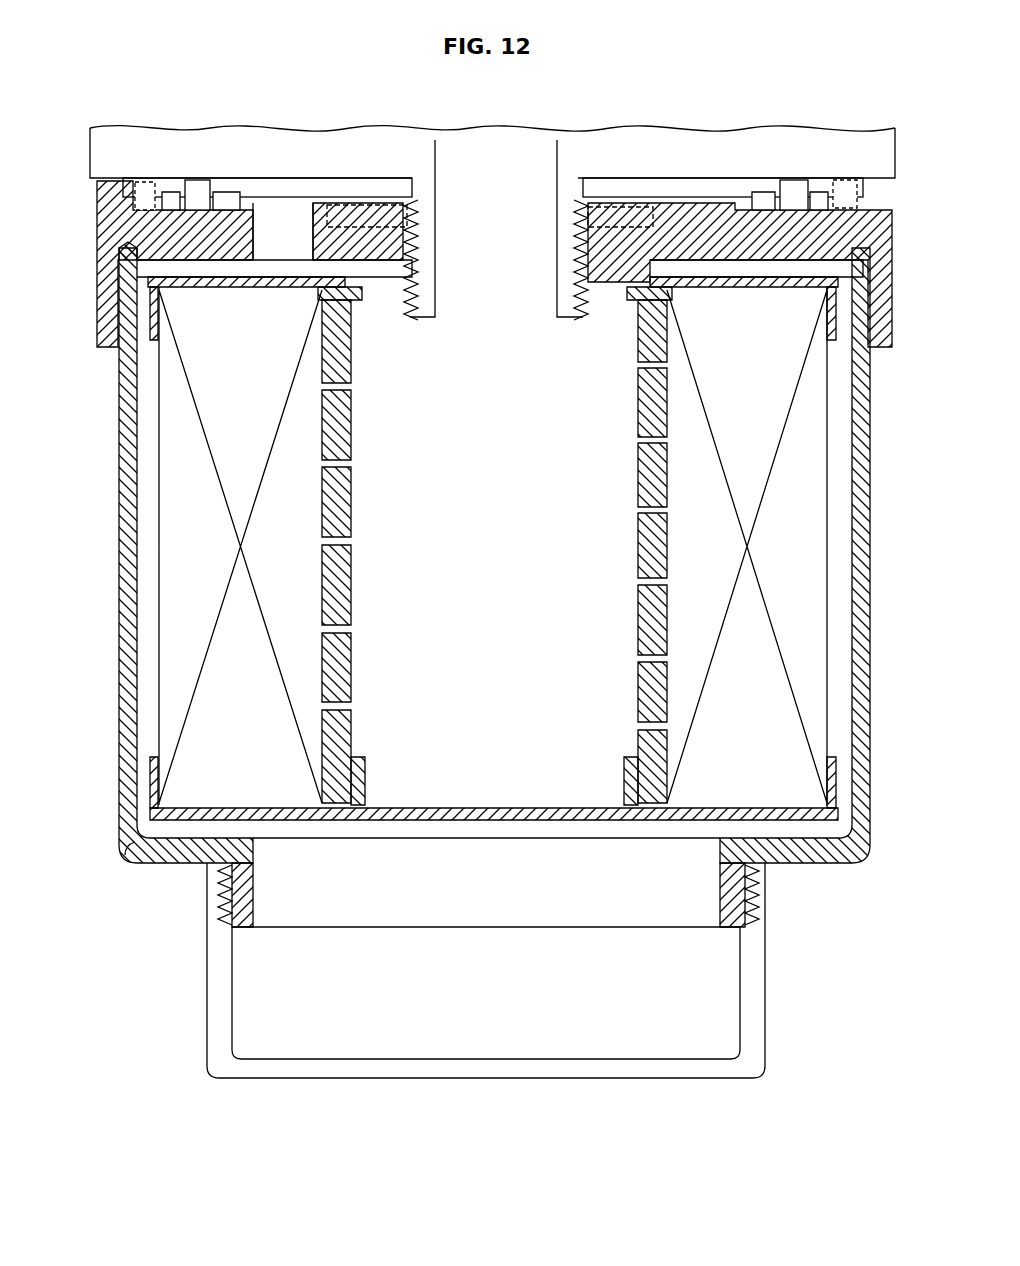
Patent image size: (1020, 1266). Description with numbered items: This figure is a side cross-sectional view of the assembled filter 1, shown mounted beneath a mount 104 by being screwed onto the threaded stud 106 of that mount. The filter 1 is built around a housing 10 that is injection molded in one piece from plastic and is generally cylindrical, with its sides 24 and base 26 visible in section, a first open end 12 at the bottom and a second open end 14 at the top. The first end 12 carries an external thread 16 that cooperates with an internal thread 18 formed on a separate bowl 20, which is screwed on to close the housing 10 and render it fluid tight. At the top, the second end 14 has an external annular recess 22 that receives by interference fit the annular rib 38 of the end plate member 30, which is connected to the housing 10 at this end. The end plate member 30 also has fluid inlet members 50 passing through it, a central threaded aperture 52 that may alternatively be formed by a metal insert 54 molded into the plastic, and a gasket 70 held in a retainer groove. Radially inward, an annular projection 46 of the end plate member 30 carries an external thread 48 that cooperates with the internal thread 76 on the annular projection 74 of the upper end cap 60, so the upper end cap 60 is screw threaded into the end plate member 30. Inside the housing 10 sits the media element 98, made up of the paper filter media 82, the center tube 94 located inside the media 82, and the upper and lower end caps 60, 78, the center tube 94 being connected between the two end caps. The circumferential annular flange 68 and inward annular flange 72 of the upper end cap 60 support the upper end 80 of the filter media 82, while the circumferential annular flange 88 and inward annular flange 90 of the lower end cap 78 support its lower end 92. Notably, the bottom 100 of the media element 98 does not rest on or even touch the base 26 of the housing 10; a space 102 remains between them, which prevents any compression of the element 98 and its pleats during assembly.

The filter 1 is at (60, 446).
The housing 10 is at (110, 573).
The first open end 12 is at (838, 862).
The second open end 14 is at (858, 355).
The external thread 16 is at (765, 895).
The internal thread 18 is at (245, 893).
The bowl 20 is at (358, 1075).
The external annular recess 22 is at (160, 292).
The sides 24 is at (119, 487).
The base 26 is at (785, 862).
The end plate member 30 is at (97, 207).
The annular rib 38 is at (120, 290).
The annular projection 46 is at (580, 262).
The external thread 48 is at (415, 248).
The fluid inlet members 50 is at (290, 230).
The central threaded aperture 52 is at (415, 215).
The metal insert 54 is at (602, 207).
The upper end cap 60 is at (283, 287).
The circumferential annular flange 68 is at (825, 320).
The gasket 70 is at (795, 180).
The inward annular flange 72 is at (633, 345).
The annular projection 74 is at (355, 250).
The internal thread 76 is at (360, 300).
The lower end cap 78 is at (530, 808).
The upper end 80 is at (322, 355).
The filter media 82 is at (298, 575).
The circumferential annular flange 88 is at (150, 770).
The inward annular flange 90 is at (366, 777).
The lower end 92 is at (290, 766).
The center tube 94 is at (335, 656).
The media element 98 is at (142, 666).
The bottom 100 is at (490, 820).
The space 102 is at (150, 852).
The mount 104 is at (95, 140).
The threaded stud 106 is at (578, 312).